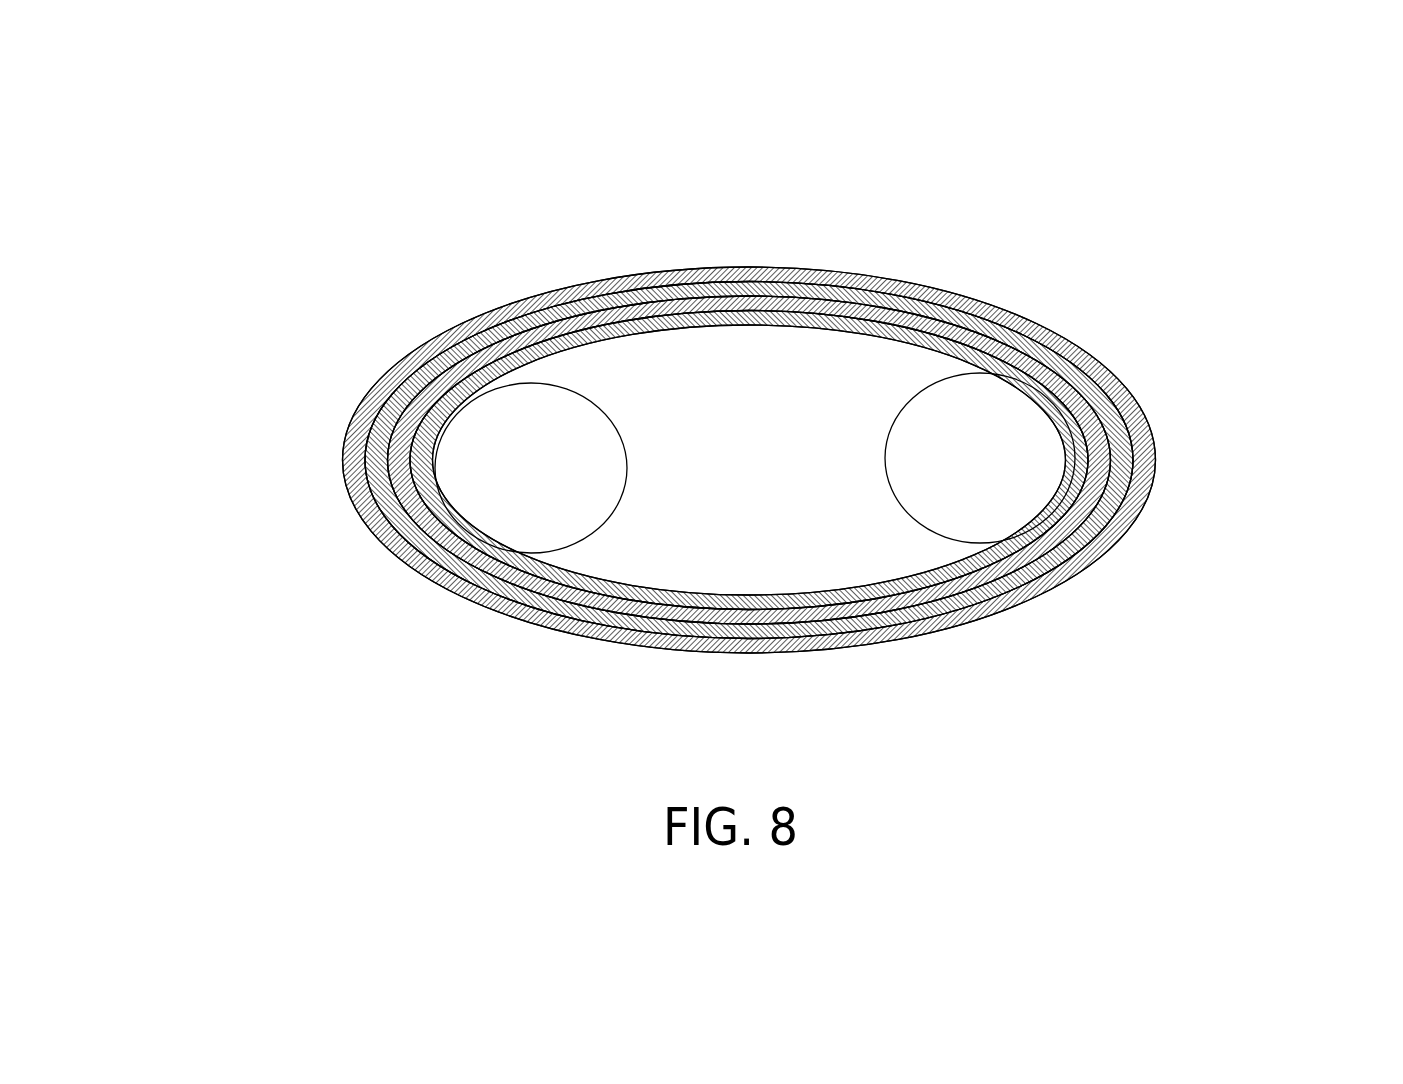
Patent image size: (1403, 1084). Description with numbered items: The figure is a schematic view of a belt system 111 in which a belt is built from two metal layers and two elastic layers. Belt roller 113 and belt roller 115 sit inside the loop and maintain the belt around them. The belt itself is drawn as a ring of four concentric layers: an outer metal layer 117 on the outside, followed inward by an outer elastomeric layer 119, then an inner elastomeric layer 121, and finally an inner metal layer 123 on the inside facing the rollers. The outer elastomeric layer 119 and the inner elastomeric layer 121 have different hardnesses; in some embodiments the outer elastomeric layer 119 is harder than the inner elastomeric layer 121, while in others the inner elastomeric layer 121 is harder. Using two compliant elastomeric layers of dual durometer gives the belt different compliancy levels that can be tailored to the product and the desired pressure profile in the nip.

The belt system 111 is at (789, 494).
The belt roller 113 is at (547, 503).
The belt roller 115 is at (985, 477).
The outer metal layer 117 is at (1145, 497).
The outer elastomeric layer 119 is at (1150, 438).
The inner elastomeric layer 121 is at (1090, 377).
The inner metal layer 123 is at (984, 343).